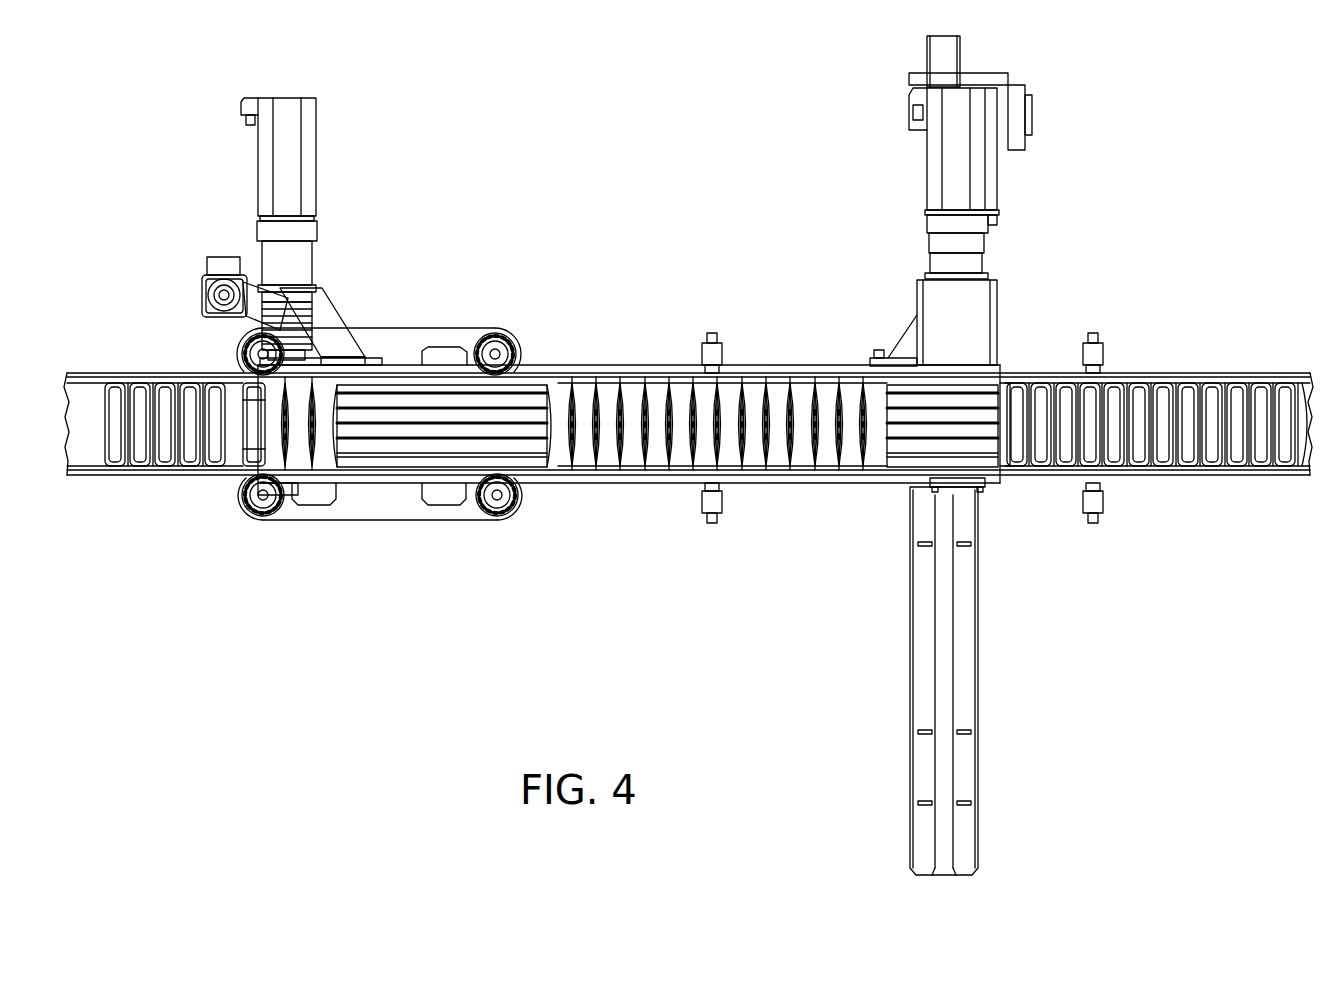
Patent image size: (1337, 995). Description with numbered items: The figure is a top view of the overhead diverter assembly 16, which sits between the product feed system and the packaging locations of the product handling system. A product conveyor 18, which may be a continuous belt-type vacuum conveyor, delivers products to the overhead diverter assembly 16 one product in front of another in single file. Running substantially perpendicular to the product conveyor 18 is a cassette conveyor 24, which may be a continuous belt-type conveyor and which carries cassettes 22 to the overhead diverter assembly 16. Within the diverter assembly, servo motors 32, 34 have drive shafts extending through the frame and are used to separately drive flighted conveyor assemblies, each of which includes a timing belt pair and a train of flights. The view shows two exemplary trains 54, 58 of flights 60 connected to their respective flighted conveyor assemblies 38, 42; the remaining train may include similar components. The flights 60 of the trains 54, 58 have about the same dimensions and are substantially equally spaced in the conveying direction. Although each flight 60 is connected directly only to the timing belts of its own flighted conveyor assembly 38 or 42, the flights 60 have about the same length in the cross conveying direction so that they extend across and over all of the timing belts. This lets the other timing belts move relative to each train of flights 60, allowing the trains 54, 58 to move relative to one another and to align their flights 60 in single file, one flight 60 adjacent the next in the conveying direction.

The overhead diverter assembly 16 is at (713, 175).
The product conveyor 18 is at (1000, 603).
The cassettes 22 is at (1214, 391).
The cassette conveyor 24 is at (1230, 484).
The servo motor 32 is at (308, 125).
The servo motor 34 is at (975, 175).
The flighted conveyor assembly 38 is at (640, 354).
The flighted conveyor assembly 42 is at (221, 501).
The train of flights 54 is at (787, 357).
The train of flights 58 is at (341, 356).
The flight 60 is at (585, 384).